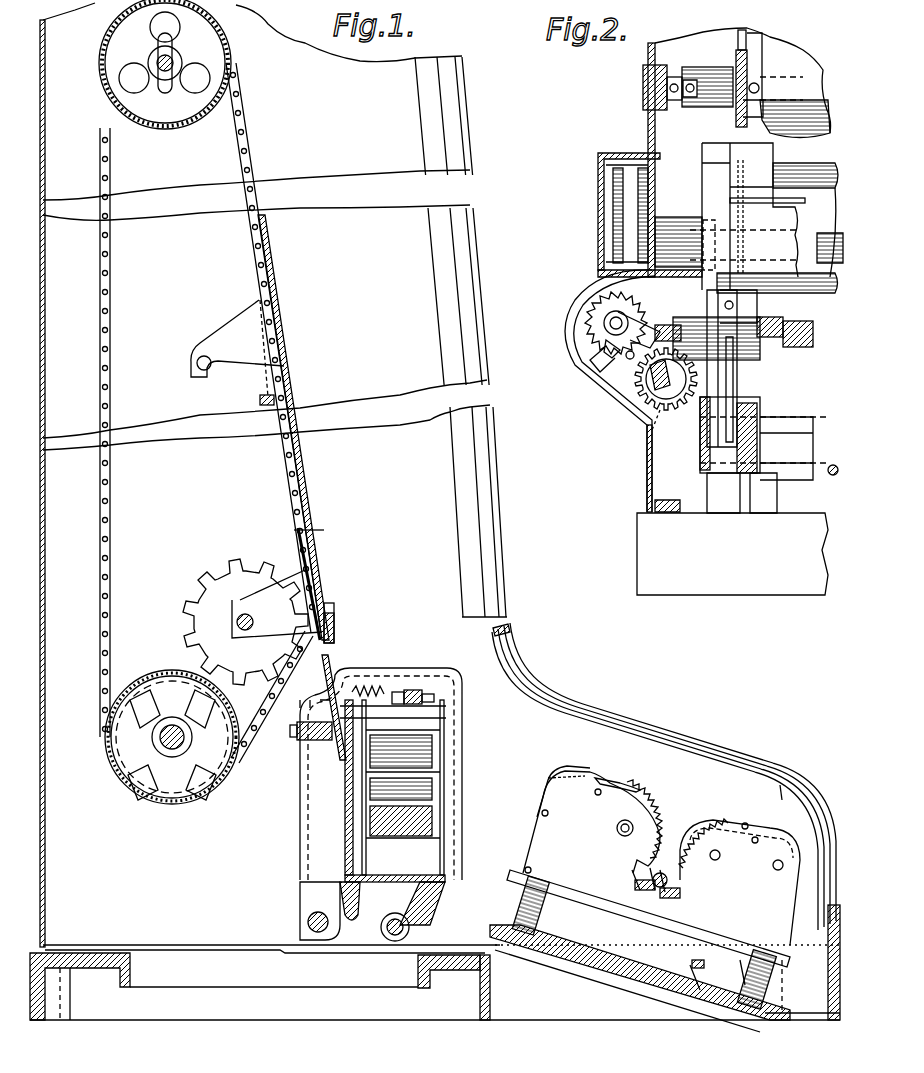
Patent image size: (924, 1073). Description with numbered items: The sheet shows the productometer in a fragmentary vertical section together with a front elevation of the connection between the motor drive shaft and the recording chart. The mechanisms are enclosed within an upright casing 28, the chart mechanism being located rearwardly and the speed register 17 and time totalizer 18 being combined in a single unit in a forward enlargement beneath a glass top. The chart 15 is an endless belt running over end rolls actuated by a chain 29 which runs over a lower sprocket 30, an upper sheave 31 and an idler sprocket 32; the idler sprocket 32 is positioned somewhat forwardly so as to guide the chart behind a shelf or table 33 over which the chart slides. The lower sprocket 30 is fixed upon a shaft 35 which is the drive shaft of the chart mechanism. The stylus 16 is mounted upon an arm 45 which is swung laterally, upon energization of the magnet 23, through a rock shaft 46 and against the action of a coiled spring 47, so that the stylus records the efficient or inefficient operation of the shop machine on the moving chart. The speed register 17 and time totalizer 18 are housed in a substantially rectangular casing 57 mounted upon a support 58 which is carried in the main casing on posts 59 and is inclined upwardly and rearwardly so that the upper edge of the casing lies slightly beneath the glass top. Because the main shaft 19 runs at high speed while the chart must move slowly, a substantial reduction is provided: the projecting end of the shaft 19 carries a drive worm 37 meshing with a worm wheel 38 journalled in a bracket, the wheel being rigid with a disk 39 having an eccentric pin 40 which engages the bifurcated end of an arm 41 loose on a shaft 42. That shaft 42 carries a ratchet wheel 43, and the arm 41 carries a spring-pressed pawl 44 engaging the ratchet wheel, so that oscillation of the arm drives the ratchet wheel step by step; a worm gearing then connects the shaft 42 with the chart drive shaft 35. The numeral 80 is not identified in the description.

In FIG. 1, the upper sheave 31 is at (226, 48).
In FIG. 1, the chain 29 is at (112, 528).
In FIG. 2, the chain 29 is at (752, 62).
In FIG. 1, the chart 15 is at (313, 583).
In FIG. 1, the stylus 16 is at (335, 615).
In FIG. 1, the idler sprocket 32 is at (222, 575).
In FIG. 1, the shelf or table 33 is at (308, 580).
In FIG. 2, the shelf or table 33 is at (775, 62).
In FIG. 1, the arm 45 is at (334, 650).
In FIG. 1, the rock shaft 46 is at (372, 705).
In FIG. 1, the coiled spring 47 is at (398, 706).
In FIG. 1, the magnet 23 is at (376, 804).
In FIG. 1, the lower sprocket 30 is at (135, 684).
In FIG. 2, the lower sprocket 30 is at (812, 168).
In FIG. 1, the shaft 35 is at (172, 753).
In FIG. 2, the shaft 35 is at (812, 258).
In FIG. 1, the upright casing 28 is at (512, 630).
In FIG. 1, the time totalizer 18 is at (556, 775).
In FIG. 1, the speed register 17 is at (665, 805).
In FIG. 1, the casing 57 is at (527, 832).
In FIG. 1, the support 58 is at (630, 915).
In FIG. 1, the posts 59 is at (538, 935).
In FIG. 1, the bolt 80 is at (710, 905).
In FIG. 2, the shaft 42 is at (600, 316).
In FIG. 2, the drive worm 37 is at (662, 333).
In FIG. 2, the ratchet wheel 43 is at (590, 330).
In FIG. 2, the arm 41 is at (585, 370).
In FIG. 2, the spring-pressed pawl 44 is at (620, 362).
In FIG. 2, the worm wheel 38 is at (739, 378).
In FIG. 2, the disk 39 is at (672, 392).
In FIG. 2, the eccentric pin 40 is at (640, 420).
In FIG. 2, the shaft 19 is at (805, 350).